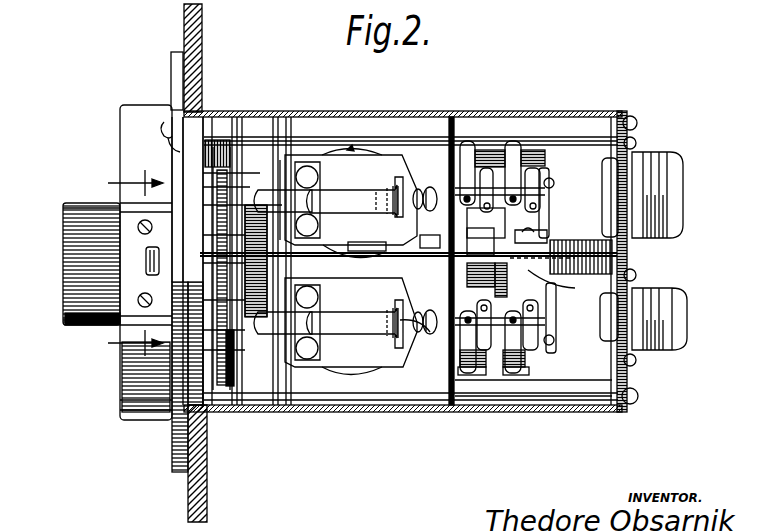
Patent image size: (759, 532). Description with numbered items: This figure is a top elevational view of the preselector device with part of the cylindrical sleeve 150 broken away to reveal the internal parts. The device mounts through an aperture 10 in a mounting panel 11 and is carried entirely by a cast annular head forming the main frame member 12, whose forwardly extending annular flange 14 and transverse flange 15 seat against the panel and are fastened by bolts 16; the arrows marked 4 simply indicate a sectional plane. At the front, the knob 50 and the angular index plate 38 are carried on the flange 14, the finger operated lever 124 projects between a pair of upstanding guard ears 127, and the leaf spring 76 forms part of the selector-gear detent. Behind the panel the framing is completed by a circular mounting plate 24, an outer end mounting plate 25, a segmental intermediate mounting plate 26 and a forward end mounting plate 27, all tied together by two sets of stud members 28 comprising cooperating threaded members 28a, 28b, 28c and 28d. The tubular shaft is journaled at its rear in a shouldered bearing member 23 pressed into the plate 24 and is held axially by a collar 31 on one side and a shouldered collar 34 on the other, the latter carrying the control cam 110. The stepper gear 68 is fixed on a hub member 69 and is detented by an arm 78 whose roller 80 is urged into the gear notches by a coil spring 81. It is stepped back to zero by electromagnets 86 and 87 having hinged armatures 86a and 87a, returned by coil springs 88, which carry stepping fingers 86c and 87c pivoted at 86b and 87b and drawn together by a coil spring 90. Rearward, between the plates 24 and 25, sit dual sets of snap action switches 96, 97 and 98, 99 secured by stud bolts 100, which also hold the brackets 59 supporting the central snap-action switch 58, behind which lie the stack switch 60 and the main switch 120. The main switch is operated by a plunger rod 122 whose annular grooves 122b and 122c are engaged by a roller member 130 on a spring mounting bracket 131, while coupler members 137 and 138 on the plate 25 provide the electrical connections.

The section line 4- 4 is at (126, 263).
The aperture 10 is at (186, 98).
The mounting panel 11 is at (198, 31).
The main frame member 12 is at (140, 420).
The annular flange 14 is at (120, 406).
The transverse flange 15 is at (174, 462).
The bolts 16 is at (162, 133).
The shouldered bearing member 23 is at (427, 314).
The mounting plate 24 is at (450, 111).
The outer end mounting plate 25 is at (630, 126).
The intermediate mounting plate 26 is at (280, 125).
The forward end mounting plate 27 is at (240, 117).
The stud members 28 is at (398, 111).
The threaded member 28a is at (207, 132).
The threaded member 28b is at (244, 130).
The threaded member 28c is at (340, 135).
The threaded member 28d is at (565, 130).
The collar 31 is at (434, 191).
The shouldered collar 34 is at (484, 286).
The index plate 38 is at (80, 238).
The knob 50 is at (63, 320).
The snap-action switch 58 is at (545, 236).
The brackets 59 is at (549, 204).
The stack switch 60 is at (562, 286).
The stepper gear 68 is at (165, 367).
The hub member 69 is at (229, 345).
The leaf spring 76 is at (200, 238).
The arm 78 is at (232, 157).
The roller 80 is at (215, 135).
The coil spring 81 is at (215, 160).
The electromagnet 86 is at (378, 402).
The armature 86a is at (312, 402).
The pivotal mounting 86b is at (352, 299).
The stepping finger 86c is at (290, 404).
The electromagnet 87 is at (352, 146).
The armature 87a is at (292, 155).
The pivotal mounting 87b is at (380, 190).
The stepping finger 87c is at (288, 132).
The coil springs 88 is at (418, 189).
The coil spring 90 is at (218, 238).
The snap action switch 96 is at (468, 143).
The snap action switch 97 is at (513, 143).
The snap action switch 98 is at (490, 402).
The snap action switch 99 is at (545, 368).
The stud bolts 100 is at (552, 181).
The control cam 110 is at (230, 183).
The main switch 120 is at (598, 250).
The plunger rod 122 is at (408, 242).
The annular groove 122b is at (355, 239).
The annular groove 122c is at (359, 243).
The finger operated lever 124 is at (146, 260).
The upstanding ears 127 is at (92, 206).
The roller member 130 is at (400, 310).
The spring mounting bracket 131 is at (423, 235).
The coupler member 137 is at (660, 152).
The coupler member 138 is at (660, 288).
The cylindrical sleeve 150 is at (600, 111).